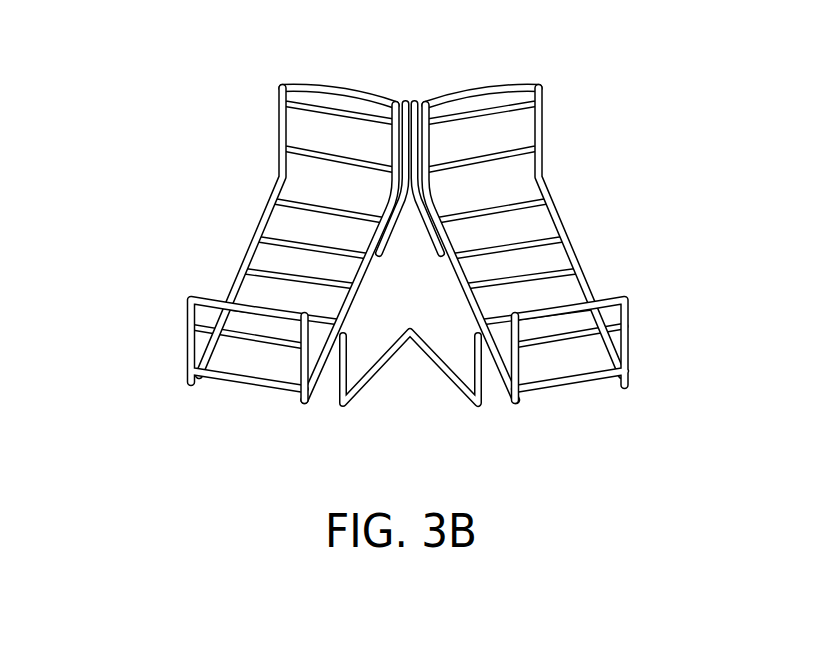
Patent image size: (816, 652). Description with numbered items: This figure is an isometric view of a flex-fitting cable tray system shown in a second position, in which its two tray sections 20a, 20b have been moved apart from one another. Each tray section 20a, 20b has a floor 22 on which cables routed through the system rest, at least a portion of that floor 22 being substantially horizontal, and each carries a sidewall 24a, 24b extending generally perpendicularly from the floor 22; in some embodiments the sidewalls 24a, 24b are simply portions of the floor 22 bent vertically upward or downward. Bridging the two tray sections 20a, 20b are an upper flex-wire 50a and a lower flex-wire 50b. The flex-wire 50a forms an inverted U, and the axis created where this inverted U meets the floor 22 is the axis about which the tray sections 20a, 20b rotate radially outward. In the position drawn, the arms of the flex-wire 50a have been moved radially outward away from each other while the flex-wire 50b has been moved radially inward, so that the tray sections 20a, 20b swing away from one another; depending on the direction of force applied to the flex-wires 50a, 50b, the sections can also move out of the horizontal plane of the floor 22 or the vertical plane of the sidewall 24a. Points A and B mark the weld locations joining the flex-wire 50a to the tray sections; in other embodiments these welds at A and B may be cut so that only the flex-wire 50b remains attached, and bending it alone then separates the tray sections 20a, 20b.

The tray section 20a is at (231, 267).
The tray section 20b is at (561, 265).
The sidewall 24a is at (272, 82).
The sidewall 24b is at (546, 82).
The floor 22 is at (491, 306).
The flex-wire 50a is at (412, 100).
The flex-wire 50b is at (421, 357).
The weld location A is at (327, 363).
The weld location B is at (487, 359).